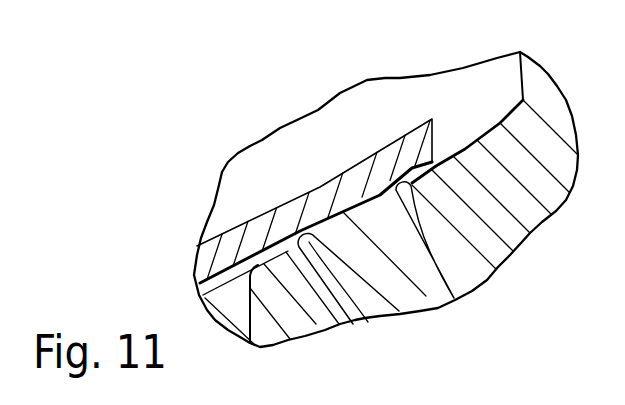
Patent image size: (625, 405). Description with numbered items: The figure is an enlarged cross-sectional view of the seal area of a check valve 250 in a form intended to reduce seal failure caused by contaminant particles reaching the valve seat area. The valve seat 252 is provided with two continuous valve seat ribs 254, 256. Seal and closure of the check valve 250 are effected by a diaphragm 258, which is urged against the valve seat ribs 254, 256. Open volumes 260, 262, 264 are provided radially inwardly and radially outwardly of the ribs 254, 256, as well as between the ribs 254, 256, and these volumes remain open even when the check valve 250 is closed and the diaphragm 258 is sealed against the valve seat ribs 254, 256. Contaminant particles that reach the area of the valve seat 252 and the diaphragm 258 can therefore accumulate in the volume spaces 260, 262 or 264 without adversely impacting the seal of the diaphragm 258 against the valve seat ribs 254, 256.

The check valve 250 is at (340, 82).
The valve seat 252 is at (458, 154).
The valve seat rib 254 is at (368, 322).
The valve seat rib 256 is at (470, 287).
The diaphragm 258 is at (283, 241).
The open volume 260 is at (268, 256).
The open volume 262 is at (510, 252).
The open volume 264 is at (325, 217).